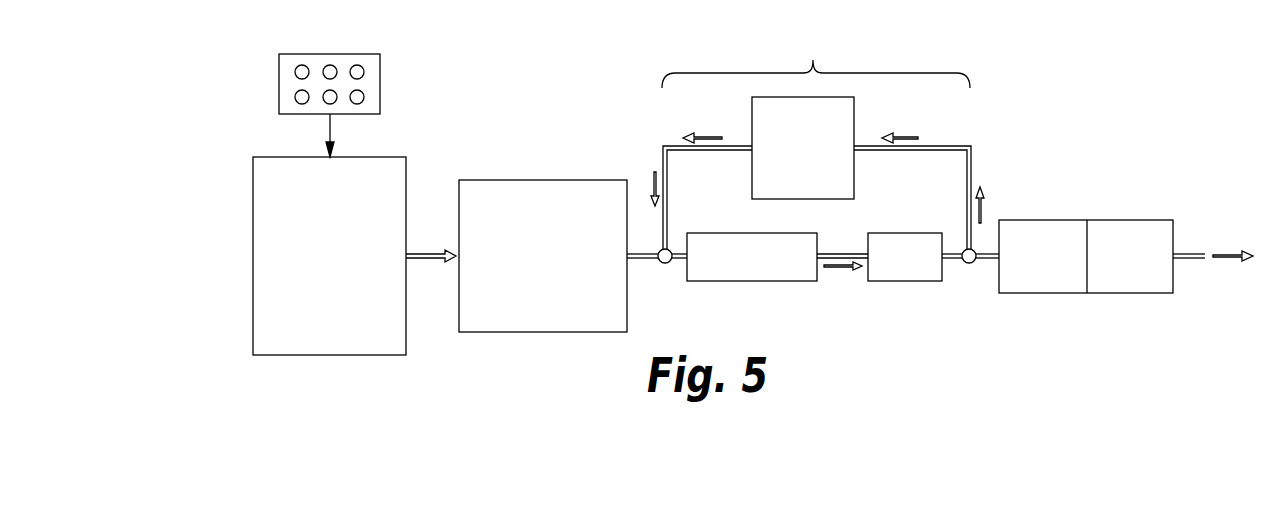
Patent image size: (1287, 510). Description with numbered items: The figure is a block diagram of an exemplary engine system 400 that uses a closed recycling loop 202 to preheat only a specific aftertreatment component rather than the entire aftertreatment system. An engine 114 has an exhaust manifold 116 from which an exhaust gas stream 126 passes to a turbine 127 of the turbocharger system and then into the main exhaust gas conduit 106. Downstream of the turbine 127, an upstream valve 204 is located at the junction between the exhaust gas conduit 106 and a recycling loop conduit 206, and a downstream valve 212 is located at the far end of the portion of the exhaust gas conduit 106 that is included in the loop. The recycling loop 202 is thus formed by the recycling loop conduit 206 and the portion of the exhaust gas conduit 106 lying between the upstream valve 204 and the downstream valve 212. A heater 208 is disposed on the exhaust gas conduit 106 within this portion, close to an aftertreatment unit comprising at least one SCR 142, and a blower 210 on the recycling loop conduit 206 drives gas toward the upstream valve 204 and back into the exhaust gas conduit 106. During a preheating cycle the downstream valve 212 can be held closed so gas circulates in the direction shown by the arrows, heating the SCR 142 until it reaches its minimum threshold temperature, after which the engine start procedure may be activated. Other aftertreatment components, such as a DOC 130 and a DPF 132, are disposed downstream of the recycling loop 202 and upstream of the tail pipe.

The engine system 400 is at (1112, 98).
The engine 114 is at (279, 84).
The exhaust manifold 116 is at (294, 357).
The exhaust gas stream 126 is at (432, 262).
The turbine 127 is at (483, 178).
The main exhaust gas conduit 106 is at (683, 262).
The upstream valve 204 is at (665, 264).
The downstream valve 212 is at (969, 264).
The recycling loop conduit 206 is at (661, 155).
The recycling loop 202 is at (816, 60).
The blower 210 is at (855, 110).
The heater 208 is at (700, 232).
The SCR 142 is at (928, 232).
The DOC 130 is at (1138, 218).
The DPF 132 is at (1060, 218).